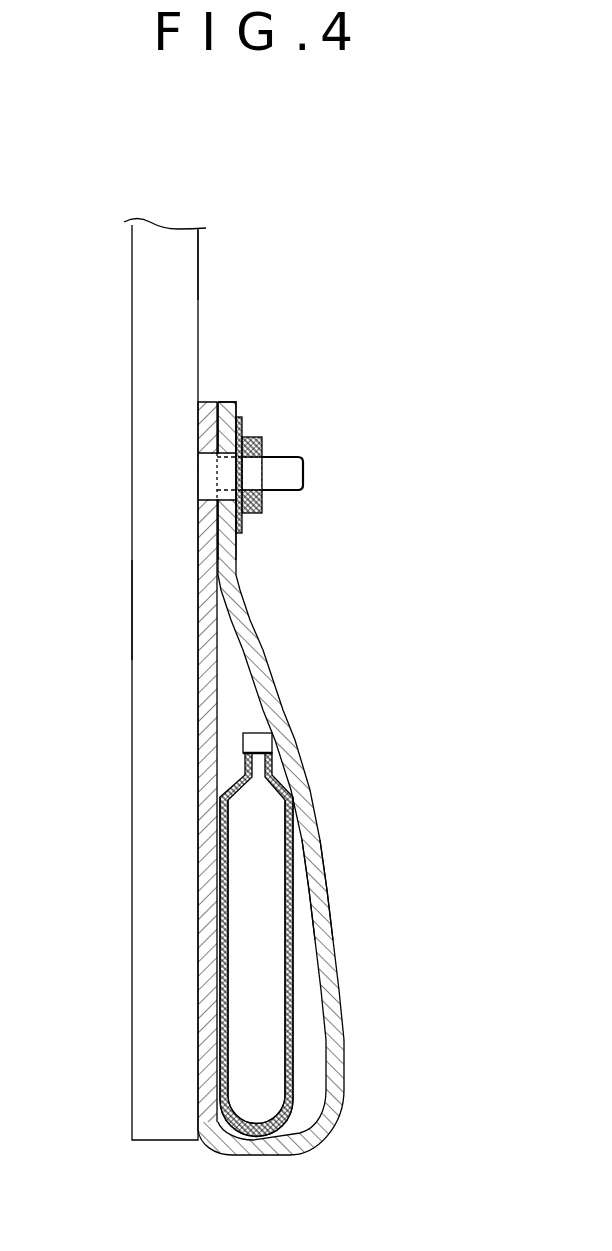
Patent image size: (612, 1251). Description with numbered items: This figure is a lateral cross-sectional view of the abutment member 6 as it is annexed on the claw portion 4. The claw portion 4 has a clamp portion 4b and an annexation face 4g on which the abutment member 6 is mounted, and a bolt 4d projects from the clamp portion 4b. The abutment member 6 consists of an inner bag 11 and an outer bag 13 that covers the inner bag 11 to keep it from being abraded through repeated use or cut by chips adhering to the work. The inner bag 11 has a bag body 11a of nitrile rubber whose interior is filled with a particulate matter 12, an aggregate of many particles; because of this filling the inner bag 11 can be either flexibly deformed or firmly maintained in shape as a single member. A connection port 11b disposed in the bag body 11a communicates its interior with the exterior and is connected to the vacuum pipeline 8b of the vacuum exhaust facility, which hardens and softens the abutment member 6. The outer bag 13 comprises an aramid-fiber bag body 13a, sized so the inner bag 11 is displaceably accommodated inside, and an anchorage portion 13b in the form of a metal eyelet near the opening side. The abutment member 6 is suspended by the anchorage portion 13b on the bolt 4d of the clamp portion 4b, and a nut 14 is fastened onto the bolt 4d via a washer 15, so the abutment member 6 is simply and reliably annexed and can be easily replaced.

The claw portion 4 is at (98, 336).
The clamp portion 4b is at (131, 611).
The annexation face 4g is at (200, 258).
The bolt 4d is at (281, 456).
The abutment member 6 is at (366, 815).
The vacuum pipeline 8b is at (245, 315).
The inner bag 11 is at (282, 943).
The bag body 11a is at (293, 1010).
The connection port 11b is at (243, 745).
The particulate matter 12 is at (262, 947).
The outer bag 13 is at (324, 784).
The bag body 13a is at (327, 874).
The anchorage portion 13b is at (213, 499).
The nut 14 is at (262, 511).
The washer 15 is at (242, 533).